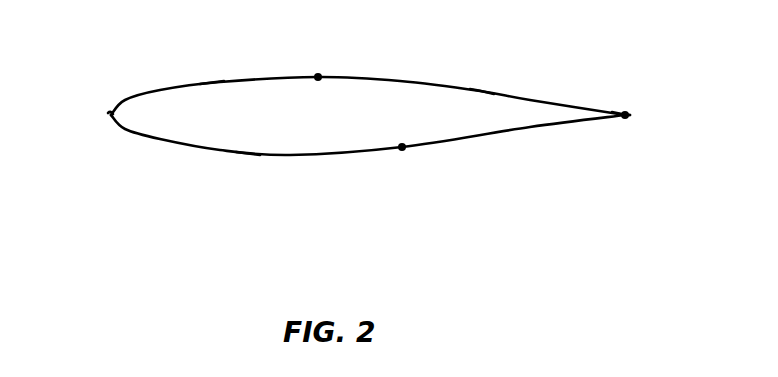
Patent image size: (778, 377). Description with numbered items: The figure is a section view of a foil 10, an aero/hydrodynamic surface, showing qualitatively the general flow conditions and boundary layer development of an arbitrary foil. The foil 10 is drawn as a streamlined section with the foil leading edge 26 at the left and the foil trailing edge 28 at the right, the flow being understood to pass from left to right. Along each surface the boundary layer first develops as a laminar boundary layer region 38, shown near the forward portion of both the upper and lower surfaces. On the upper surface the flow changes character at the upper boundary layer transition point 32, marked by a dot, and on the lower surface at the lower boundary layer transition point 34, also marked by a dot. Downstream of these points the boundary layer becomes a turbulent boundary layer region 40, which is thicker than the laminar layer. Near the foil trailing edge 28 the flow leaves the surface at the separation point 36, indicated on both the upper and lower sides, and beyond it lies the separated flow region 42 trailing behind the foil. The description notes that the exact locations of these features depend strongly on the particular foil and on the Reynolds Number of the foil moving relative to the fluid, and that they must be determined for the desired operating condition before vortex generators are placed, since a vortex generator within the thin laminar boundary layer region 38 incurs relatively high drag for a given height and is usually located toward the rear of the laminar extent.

The foil 10 is at (353, 118).
The foil leading edge 26 is at (108, 115).
The foil trailing edge 28 is at (630, 115).
The upper boundary layer transition point 32 is at (318, 77).
The lower boundary layer transition point 34 is at (402, 147).
The separation point 36 is at (624, 113).
The laminar boundary layer region 38 is at (210, 80).
The turbulent boundary layer region 40 is at (480, 93).
The separated flow region 42 is at (630, 113).